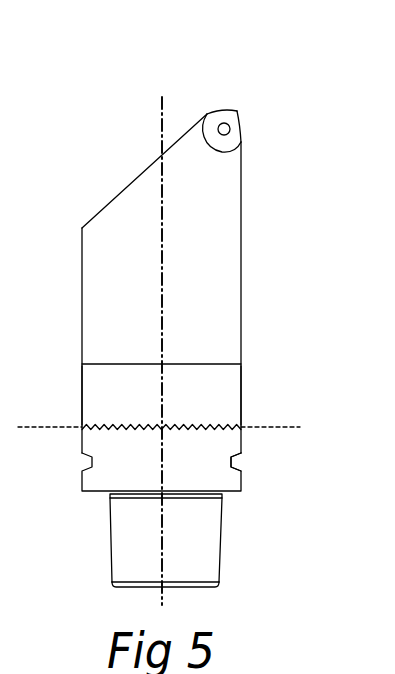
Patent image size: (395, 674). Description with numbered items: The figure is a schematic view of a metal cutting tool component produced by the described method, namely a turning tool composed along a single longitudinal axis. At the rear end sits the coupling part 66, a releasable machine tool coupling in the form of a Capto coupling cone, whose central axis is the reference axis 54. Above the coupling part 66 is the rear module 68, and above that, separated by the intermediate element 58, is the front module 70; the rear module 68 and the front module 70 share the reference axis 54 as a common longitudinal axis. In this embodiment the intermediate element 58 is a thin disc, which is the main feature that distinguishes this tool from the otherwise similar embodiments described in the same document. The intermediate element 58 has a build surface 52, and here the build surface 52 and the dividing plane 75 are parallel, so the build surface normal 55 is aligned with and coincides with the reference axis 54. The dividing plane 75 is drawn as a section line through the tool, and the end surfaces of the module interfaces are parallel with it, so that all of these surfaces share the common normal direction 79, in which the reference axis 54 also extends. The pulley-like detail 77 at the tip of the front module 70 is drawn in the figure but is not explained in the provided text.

The build surface 52 is at (123, 364).
The reference axis 54 is at (143, 302).
The build surface normal 55 is at (143, 316).
The intermediate element 58 is at (225, 389).
The coupling part 66 is at (200, 543).
The rear module 68 is at (240, 477).
The front module 70 is at (112, 248).
The dividing plane 75 is at (295, 427).
The pulley 77 is at (235, 113).
The common normal direction 79 is at (161, 125).